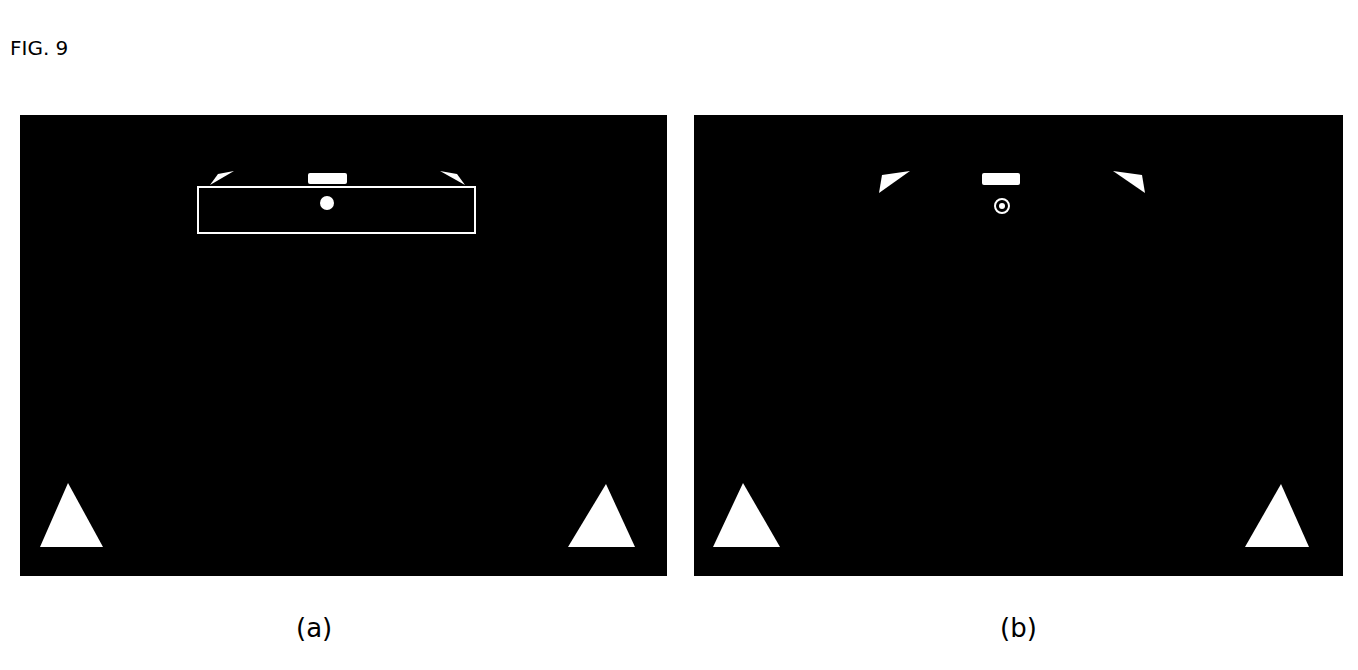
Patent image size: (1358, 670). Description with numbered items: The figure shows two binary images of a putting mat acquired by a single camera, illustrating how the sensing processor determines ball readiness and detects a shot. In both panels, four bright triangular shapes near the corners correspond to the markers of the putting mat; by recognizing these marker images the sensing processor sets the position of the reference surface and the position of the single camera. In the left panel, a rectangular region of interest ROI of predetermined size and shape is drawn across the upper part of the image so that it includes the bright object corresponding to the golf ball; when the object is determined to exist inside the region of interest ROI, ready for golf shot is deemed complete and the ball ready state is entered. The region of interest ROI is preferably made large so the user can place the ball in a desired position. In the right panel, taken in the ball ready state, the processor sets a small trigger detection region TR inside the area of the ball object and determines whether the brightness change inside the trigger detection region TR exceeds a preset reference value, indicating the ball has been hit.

The region of interest ROI is at (198, 216).
The trigger detection region TR is at (994, 207).